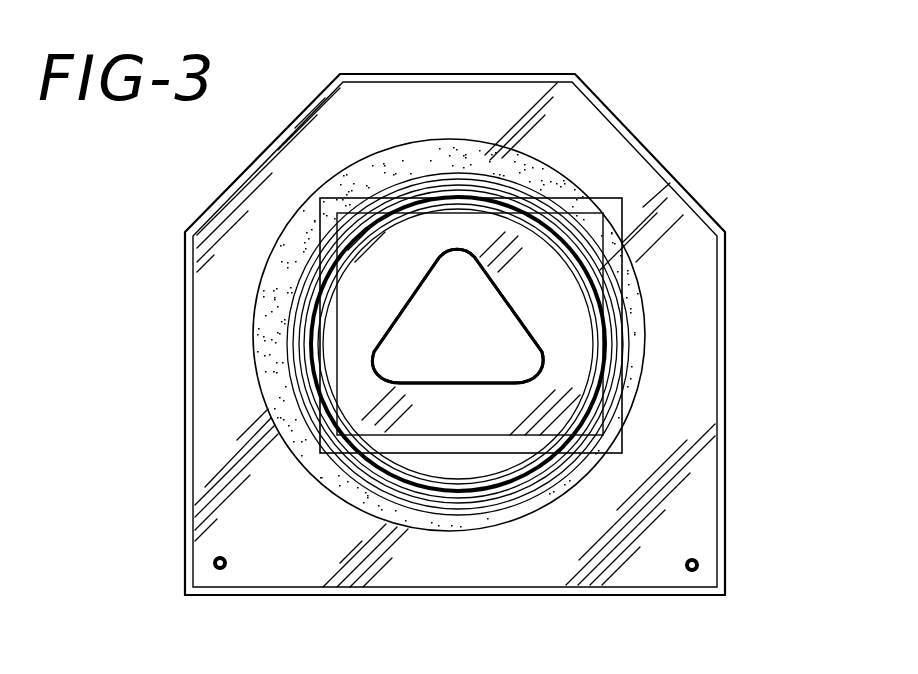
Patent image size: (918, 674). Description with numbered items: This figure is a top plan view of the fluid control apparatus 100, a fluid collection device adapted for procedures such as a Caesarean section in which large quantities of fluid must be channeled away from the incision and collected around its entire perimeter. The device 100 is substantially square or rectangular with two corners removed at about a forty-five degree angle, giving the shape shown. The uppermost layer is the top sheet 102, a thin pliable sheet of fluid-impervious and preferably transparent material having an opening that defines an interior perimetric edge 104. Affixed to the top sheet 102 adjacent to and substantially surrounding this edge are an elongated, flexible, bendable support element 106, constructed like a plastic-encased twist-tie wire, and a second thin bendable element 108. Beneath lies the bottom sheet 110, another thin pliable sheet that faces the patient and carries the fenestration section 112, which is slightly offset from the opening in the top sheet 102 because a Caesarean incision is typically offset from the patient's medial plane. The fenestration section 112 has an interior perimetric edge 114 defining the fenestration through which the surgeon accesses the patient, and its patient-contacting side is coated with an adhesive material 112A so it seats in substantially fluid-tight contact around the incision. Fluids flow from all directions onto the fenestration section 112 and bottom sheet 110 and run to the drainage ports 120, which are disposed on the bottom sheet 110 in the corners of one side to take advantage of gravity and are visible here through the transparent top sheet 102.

The fluid control apparatus 100 is at (731, 105).
The top sheet 102 is at (683, 228).
The interior perimetric edge 104 is at (576, 412).
The elongated flexible bendable support element 106 is at (414, 176).
The second thin bendable element 108 is at (447, 185).
The bottom sheet 110 is at (441, 470).
The fenestration section 112 is at (565, 312).
The adhesive material 112A is at (469, 413).
The interior perimetric edge of the fenestration section 114 is at (398, 296).
The drainage ports 120 is at (214, 563).